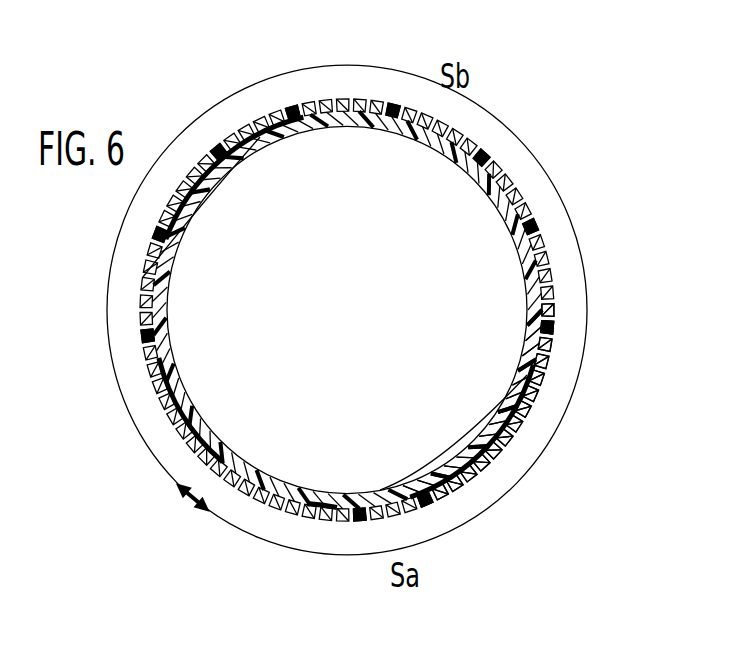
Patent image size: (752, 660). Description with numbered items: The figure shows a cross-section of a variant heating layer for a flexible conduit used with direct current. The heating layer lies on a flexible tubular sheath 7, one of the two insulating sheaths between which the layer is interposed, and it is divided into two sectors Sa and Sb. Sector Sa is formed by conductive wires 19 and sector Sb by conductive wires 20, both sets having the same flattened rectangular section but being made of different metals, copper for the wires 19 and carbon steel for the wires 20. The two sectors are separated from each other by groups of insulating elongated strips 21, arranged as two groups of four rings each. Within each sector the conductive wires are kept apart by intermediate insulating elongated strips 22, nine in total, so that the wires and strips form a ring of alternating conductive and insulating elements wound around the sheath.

The flexible tubular sheath 7 is at (536, 363).
The conductive wires 19 is at (307, 503).
The conductive wires 20 is at (262, 142).
The insulating elongated strips 21 is at (200, 440).
The intermediate insulating elongated strips 22 is at (210, 152).